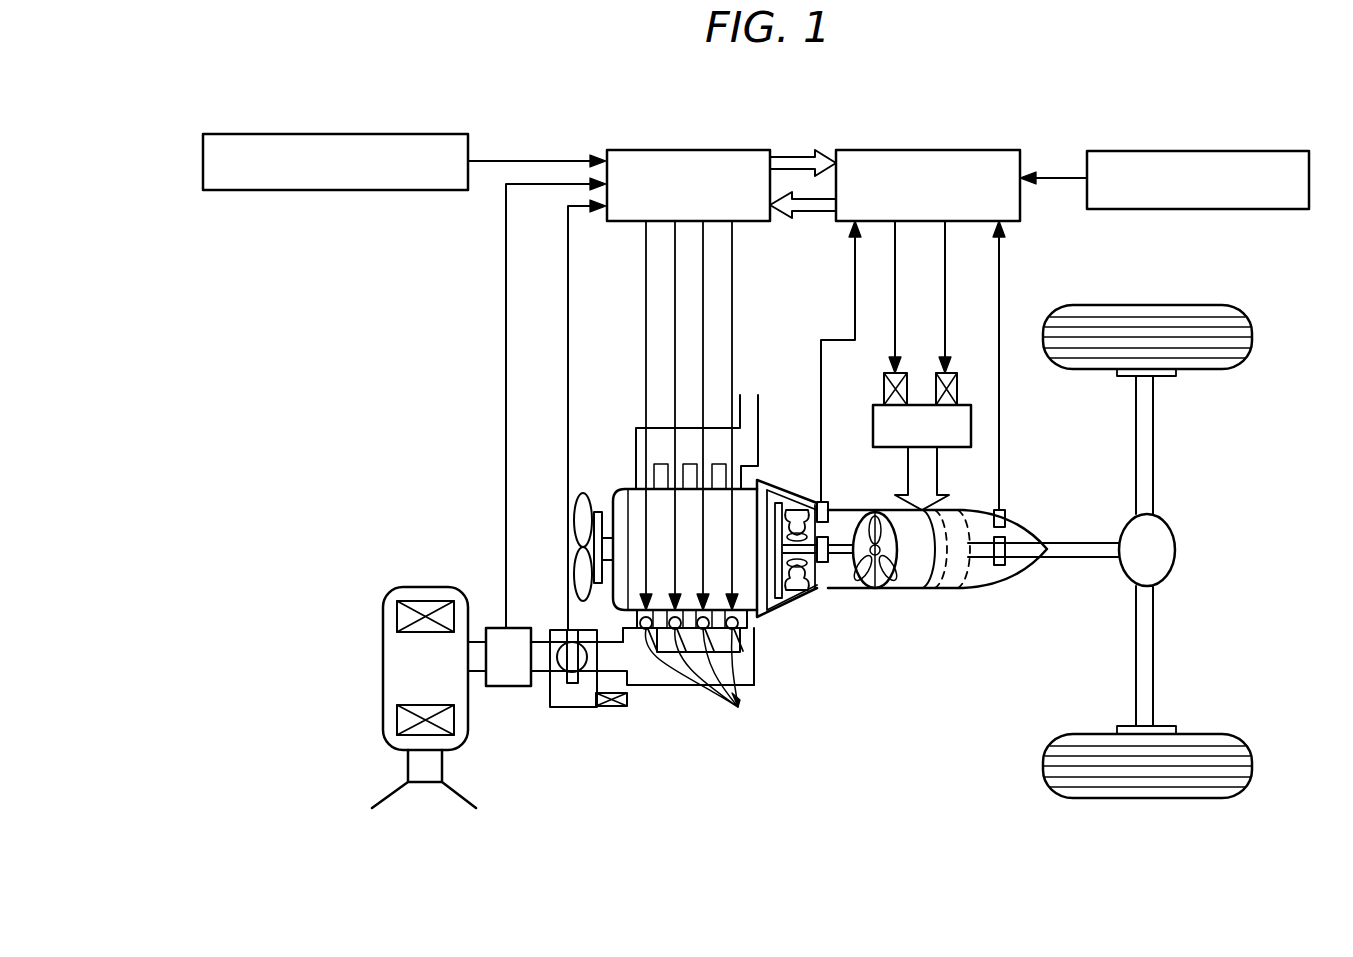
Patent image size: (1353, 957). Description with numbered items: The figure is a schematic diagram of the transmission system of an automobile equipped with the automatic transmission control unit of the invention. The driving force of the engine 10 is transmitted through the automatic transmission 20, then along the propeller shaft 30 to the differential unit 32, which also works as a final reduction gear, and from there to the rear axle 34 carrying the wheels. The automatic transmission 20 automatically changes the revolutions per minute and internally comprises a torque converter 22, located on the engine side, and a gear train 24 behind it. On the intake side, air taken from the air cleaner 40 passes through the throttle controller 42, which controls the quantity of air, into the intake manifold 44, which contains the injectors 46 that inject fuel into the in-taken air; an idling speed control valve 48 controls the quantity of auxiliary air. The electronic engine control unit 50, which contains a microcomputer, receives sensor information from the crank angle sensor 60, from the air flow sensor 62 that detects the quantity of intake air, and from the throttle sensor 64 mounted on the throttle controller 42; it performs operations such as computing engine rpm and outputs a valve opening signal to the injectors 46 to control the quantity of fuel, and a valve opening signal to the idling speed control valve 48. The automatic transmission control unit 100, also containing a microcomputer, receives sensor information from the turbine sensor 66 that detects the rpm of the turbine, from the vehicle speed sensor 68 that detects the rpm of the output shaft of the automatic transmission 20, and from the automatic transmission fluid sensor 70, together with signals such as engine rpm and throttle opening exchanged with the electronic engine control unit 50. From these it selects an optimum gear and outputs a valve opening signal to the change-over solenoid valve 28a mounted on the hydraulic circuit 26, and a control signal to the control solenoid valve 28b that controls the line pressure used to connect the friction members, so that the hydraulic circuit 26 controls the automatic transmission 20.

The engine 10 is at (750, 618).
The automatic transmission 20 is at (852, 591).
The torque converter 22 is at (805, 596).
The gear train 24 is at (905, 591).
The hydraulic circuit 26 is at (870, 434).
The change-over solenoid valve 28a is at (884, 392).
The solenoid valve 28b is at (962, 390).
The propeller shaft 30 is at (1073, 560).
The differential unit 32 is at (1176, 548).
The rear axle 34 is at (1146, 305).
The air cleaner 40 is at (428, 587).
The throttle controller 42 is at (571, 707).
The intake manifold 44 is at (673, 686).
The injectors 46 is at (699, 675).
The idling speed control valve 48 is at (618, 707).
The electronic engine control unit 50 is at (684, 150).
The crank angle sensor 60 is at (330, 134).
The air flow sensor 62 is at (506, 686).
The throttle sensor 64 is at (565, 631).
The turbine sensor 66 is at (818, 503).
The vehicle speed sensor 68 is at (1006, 515).
The automatic transmission fluid sensor 70 is at (1192, 151).
The automatic transmission control unit 100 is at (925, 150).